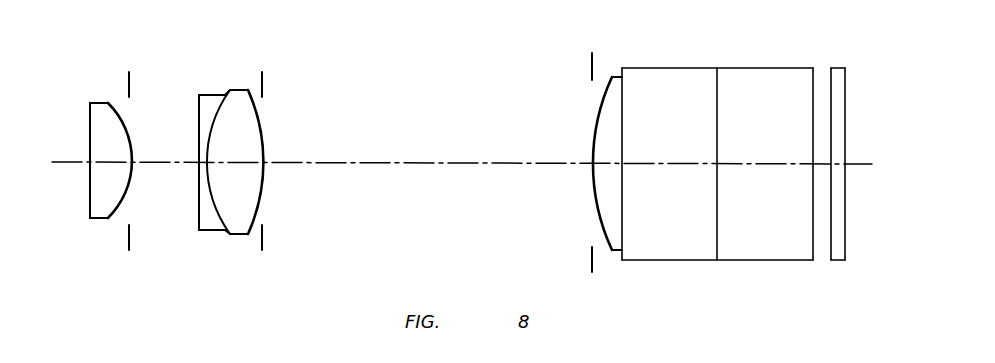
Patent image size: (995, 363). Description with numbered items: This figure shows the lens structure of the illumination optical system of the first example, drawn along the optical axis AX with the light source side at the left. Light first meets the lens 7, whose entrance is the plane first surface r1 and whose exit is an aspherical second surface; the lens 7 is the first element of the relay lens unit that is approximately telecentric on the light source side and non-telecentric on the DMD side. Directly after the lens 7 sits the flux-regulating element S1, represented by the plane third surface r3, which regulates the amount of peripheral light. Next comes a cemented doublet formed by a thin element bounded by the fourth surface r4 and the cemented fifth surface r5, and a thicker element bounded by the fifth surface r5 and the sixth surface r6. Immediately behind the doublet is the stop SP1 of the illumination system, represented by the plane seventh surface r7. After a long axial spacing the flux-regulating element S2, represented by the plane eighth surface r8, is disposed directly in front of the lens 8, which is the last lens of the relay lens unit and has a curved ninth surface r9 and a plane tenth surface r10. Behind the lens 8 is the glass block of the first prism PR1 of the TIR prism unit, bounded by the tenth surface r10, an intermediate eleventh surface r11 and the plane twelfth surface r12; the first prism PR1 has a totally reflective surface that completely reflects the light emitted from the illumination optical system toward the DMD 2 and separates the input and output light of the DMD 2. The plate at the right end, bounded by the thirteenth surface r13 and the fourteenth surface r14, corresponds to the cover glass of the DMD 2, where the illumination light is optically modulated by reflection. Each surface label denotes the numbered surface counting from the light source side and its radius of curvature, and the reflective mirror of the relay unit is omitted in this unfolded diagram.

The optical axis AX is at (432, 160).
The lens 7 is at (113, 160).
The first surface r1 is at (90, 130).
The third surface r3 is at (128, 84).
The flux-regulating element S1 is at (130, 238).
The fourth surface r4 is at (199, 183).
The fifth surface r5 is at (212, 203).
The sixth surface r6 is at (263, 138).
The seventh surface r7 is at (262, 83).
The stop SP1 is at (262, 238).
The eighth surface r8 is at (592, 65).
The flux-regulating element S2 is at (592, 257).
The lens 8 is at (587, 163).
The ninth surface r9 is at (597, 122).
The tenth surface r10 is at (622, 122).
The eleventh surface r11 is at (717, 202).
The twelfth surface r12 is at (812, 107).
The first prism PR1 is at (717, 187).
The thirteenth surface r13 is at (828, 87).
The fourteenth surface r14 is at (847, 108).
The DMD 2 is at (861, 166).